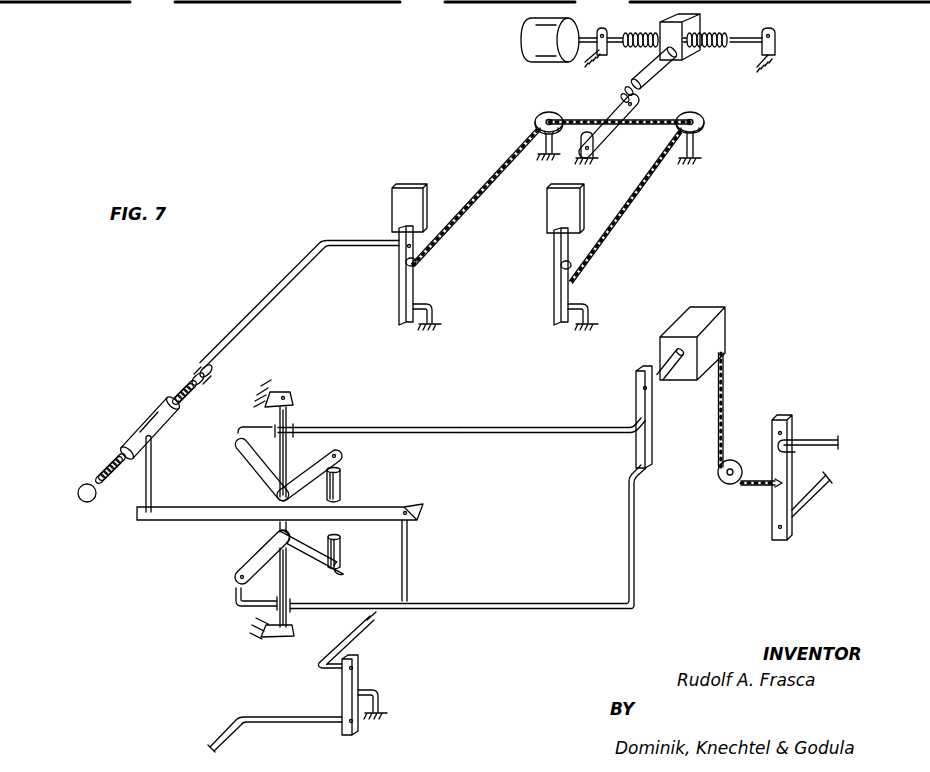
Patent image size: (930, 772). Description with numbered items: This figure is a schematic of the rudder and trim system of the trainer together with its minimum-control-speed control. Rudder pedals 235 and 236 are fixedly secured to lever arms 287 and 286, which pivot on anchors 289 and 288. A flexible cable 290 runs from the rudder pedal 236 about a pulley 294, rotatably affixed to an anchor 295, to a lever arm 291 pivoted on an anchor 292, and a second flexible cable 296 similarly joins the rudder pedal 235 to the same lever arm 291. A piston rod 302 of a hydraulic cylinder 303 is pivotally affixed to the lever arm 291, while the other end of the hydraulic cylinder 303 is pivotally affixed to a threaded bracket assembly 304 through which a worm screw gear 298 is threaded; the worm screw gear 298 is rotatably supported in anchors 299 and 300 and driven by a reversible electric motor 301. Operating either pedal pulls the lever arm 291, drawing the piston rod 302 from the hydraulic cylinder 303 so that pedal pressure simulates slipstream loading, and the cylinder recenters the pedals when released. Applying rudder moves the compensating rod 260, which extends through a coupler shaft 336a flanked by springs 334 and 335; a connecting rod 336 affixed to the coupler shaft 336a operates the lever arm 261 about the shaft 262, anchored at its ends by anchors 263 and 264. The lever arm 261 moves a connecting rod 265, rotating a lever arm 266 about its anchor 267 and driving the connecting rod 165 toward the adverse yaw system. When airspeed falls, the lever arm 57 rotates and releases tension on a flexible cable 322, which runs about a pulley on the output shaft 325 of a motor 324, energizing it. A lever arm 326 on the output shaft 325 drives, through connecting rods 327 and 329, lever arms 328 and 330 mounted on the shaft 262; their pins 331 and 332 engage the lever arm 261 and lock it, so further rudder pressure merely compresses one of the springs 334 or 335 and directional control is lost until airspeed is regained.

The reversible electric motor 301 is at (520, 36).
The anchor 299 is at (597, 52).
The threaded bracket assembly 304 is at (680, 20).
The worm screw gear 298 is at (700, 50).
The anchor 300 is at (778, 40).
The hydraulic cylinder 303 is at (655, 72).
The piston rod 302 is at (620, 90).
The lever arm 291 is at (617, 133).
The anchor 292 is at (595, 160).
The pulley 294 is at (540, 116).
The anchor 295 is at (543, 154).
The flexible cable 290 is at (507, 160).
The flexible cable 296 is at (640, 190).
The rudder pedal 236 is at (404, 192).
The lever arm 286 is at (398, 288).
The anchor 288 is at (434, 316).
The rudder pedal 235 is at (547, 215).
The lever arm 287 is at (553, 284).
The anchor 289 is at (589, 310).
The compensating rod 260 is at (290, 278).
The pin 332 is at (200, 362).
The spring 334 is at (178, 385).
The coupler shaft 336a is at (137, 420).
The spring 335 is at (97, 468).
The pin 331 is at (78, 491).
The connecting rod 336 is at (143, 508).
The lever arm 261 is at (218, 505).
The anchor 264 is at (305, 362).
The lever arm 328 is at (232, 447).
The shaft 262 is at (292, 424).
The connecting rod 327 is at (530, 432).
The lever arm 330 is at (235, 563).
The anchor 263 is at (283, 640).
The connecting rod 329 is at (538, 603).
The connecting rod 265 is at (370, 628).
The lever arm 266 is at (340, 690).
The anchor 267 is at (380, 702).
The connecting rod 165 is at (240, 718).
The motor 324 is at (703, 325).
The output shaft 325 is at (665, 380).
The lever arm 326 is at (635, 392).
The flexible cable 322 is at (723, 390).
The lever arm 57 is at (786, 415).